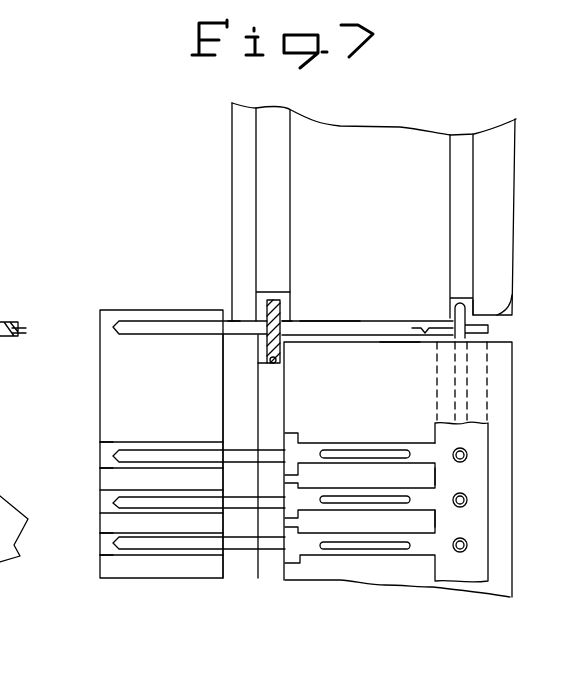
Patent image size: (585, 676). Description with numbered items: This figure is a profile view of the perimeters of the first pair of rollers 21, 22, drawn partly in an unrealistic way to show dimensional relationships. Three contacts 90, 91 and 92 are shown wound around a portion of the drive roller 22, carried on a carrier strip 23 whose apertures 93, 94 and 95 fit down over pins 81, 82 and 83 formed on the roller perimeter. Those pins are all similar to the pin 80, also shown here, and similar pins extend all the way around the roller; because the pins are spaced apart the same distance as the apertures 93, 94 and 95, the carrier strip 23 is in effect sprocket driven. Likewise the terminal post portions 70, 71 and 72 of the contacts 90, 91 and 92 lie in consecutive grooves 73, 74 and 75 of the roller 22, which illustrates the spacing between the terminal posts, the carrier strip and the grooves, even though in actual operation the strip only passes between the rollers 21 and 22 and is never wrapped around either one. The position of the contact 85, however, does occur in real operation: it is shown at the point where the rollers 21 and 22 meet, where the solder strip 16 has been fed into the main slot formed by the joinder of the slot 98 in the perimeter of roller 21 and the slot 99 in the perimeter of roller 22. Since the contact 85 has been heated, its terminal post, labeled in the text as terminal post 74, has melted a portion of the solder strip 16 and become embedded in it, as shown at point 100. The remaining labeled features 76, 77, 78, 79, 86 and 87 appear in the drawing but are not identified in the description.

The solder strip 16 is at (276, 360).
The roller 21 is at (388, 172).
The drive roller 22 is at (406, 429).
The carrier strip 23 is at (460, 570).
The terminal post portion 70 is at (173, 549).
The terminal post portion 71 is at (178, 500).
The terminal post portion 72 is at (187, 455).
The groove 73 is at (100, 548).
The groove 74 is at (153, 325).
The groove 75 is at (107, 453).
The guide block 76 is at (240, 340).
The bar junction 77 is at (238, 321).
The lever bar 78 is at (385, 321).
The housing top wall 79 is at (397, 342).
The pin 80 is at (458, 327).
The pin 81 is at (470, 545).
The pin 82 is at (468, 498).
The pin 83 is at (465, 450).
The contact 85 is at (350, 327).
The column end 86 is at (477, 310).
The cam surface 87 is at (500, 308).
The contact 90 is at (345, 555).
The contact 91 is at (320, 513).
The contact 92 is at (318, 466).
The aperture 93 is at (458, 553).
The aperture 94 is at (465, 505).
The aperture 95 is at (470, 458).
The slot 98 is at (285, 292).
The slot 99 is at (275, 363).
The point of embedding 100 is at (282, 322).